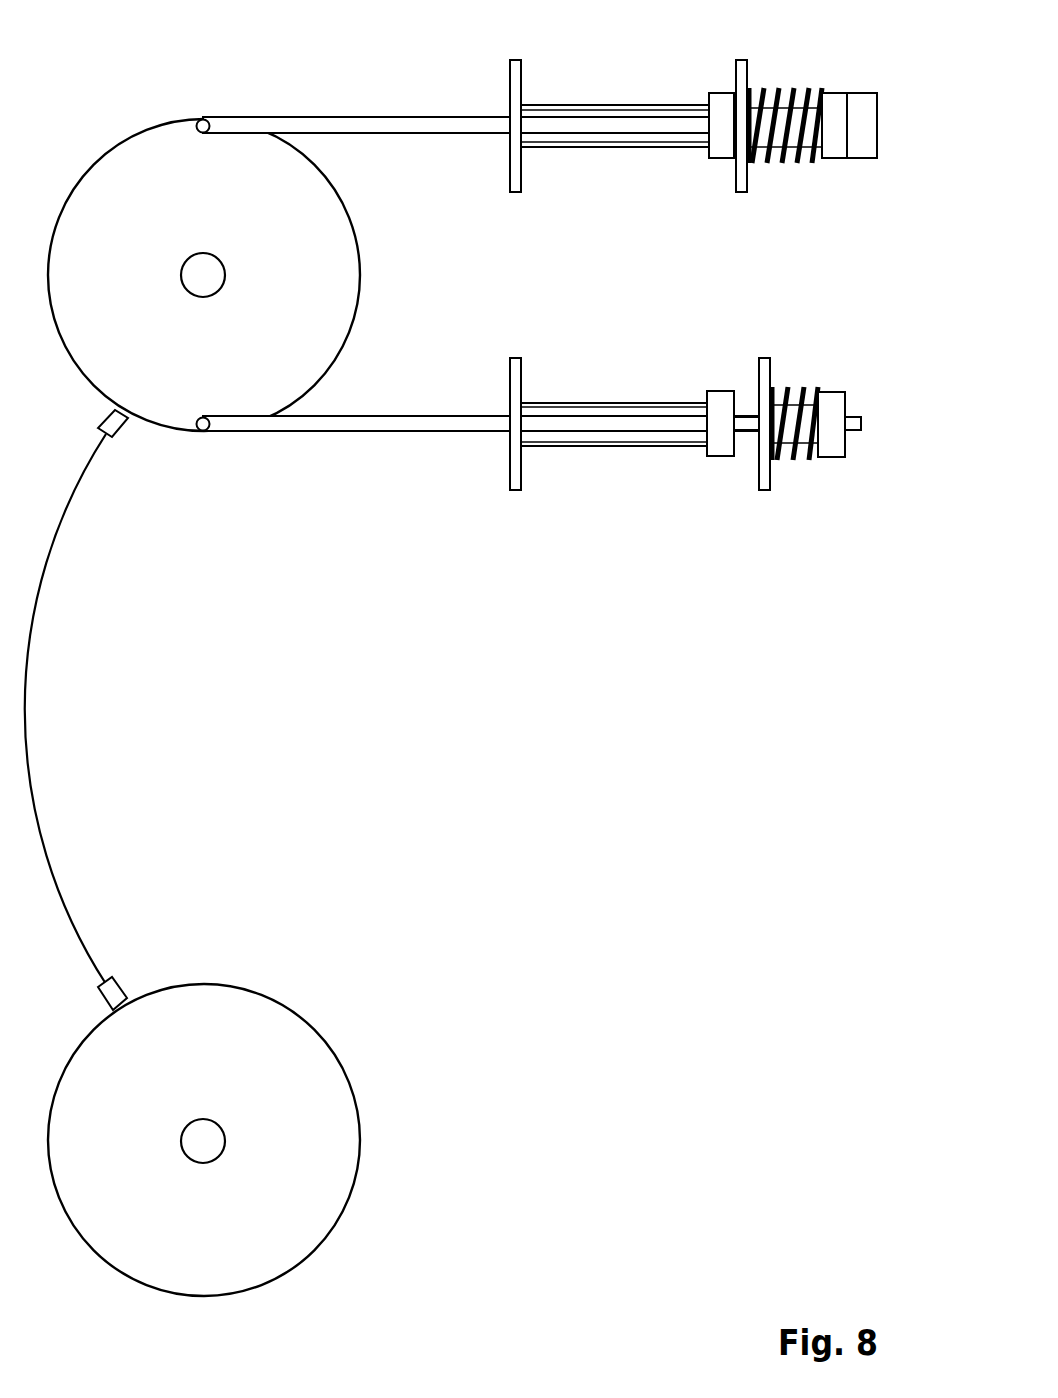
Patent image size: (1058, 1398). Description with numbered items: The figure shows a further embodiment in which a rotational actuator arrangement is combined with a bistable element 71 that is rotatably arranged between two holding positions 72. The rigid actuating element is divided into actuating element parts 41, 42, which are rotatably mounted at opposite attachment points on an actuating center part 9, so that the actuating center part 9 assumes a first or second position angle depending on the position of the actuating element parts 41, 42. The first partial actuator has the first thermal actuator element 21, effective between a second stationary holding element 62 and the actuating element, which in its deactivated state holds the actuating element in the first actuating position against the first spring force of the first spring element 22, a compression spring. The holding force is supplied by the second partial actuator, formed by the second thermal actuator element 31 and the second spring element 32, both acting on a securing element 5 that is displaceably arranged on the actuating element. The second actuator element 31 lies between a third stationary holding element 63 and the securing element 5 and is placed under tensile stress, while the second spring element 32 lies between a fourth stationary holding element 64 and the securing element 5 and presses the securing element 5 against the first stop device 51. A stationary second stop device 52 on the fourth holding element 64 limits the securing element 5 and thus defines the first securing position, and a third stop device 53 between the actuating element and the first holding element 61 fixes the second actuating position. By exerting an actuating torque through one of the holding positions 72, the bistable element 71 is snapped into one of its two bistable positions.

The securing element 5 is at (722, 92).
The actuating center part 9 is at (340, 274).
The first thermal actuator element 21 is at (612, 402).
The first spring element 22 is at (796, 390).
The second thermal actuator element 31 is at (611, 104).
The second spring element 32 is at (787, 88).
The actuating element part 41 is at (476, 415).
The actuating element part 42 is at (477, 116).
The first stop device 51 is at (846, 78).
The second stop device 52 is at (728, 172).
The third stop device 53 is at (744, 462).
The first holding element 61 is at (765, 357).
The second stationary holding element 62 is at (515, 357).
The third stationary holding element 63 is at (515, 59).
The fourth stationary holding element 64 is at (742, 59).
The bistable element 71 is at (25, 711).
The holding position 72 is at (226, 275).